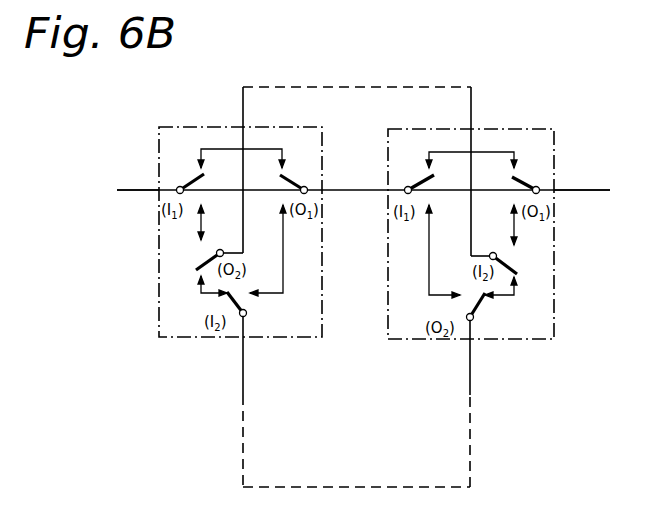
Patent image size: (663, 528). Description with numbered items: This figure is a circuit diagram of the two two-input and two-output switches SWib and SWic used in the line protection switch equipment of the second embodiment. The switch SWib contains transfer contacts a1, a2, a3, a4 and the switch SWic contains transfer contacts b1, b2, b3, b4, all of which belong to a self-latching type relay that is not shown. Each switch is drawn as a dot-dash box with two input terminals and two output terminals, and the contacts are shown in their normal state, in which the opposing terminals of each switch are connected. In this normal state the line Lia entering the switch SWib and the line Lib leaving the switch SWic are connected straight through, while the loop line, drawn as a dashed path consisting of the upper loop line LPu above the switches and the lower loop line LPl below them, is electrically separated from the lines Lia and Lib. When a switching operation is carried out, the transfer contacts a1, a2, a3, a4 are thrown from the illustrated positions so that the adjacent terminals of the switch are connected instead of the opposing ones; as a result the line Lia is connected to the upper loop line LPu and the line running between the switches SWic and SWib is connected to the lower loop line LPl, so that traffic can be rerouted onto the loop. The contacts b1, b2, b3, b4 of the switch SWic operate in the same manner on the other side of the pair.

The transfer contact a1 is at (179, 186).
The transfer contact a2 is at (304, 186).
The transfer contact a3 is at (220, 249).
The transfer contact a4 is at (247, 313).
The transfer contact b1 is at (408, 186).
The transfer contact b2 is at (536, 186).
The transfer contact b3 is at (493, 252).
The transfer contact b4 is at (474, 318).
The two-input and two-output switch SWib is at (172, 126).
The two-input and two-output switch SWic is at (483, 129).
The upper loop line LPu is at (474, 86).
The lower loop line LPl is at (471, 378).
The line Lia is at (136, 177).
The line Lib is at (582, 180).